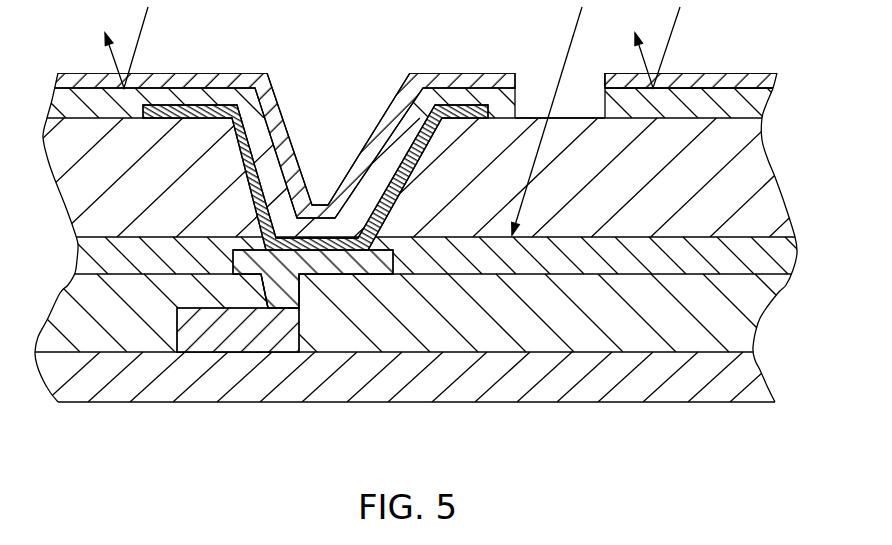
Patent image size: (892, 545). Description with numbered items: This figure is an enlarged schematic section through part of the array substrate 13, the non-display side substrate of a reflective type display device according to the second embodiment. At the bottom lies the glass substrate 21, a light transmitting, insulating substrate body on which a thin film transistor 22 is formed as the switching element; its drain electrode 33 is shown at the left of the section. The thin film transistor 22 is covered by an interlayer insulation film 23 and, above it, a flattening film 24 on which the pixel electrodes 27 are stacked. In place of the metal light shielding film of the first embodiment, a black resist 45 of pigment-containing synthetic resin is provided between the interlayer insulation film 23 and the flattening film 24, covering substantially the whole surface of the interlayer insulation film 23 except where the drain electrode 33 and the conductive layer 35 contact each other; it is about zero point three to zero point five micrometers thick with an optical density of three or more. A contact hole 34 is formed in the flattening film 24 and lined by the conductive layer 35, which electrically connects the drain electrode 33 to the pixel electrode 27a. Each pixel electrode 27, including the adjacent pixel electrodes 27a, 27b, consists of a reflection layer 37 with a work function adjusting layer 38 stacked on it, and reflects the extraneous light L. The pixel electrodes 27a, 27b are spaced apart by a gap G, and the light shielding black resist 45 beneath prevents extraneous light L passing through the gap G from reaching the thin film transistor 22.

The array substrate 13 is at (474, 51).
The glass substrate 21 is at (755, 379).
The thin film transistor 22 is at (268, 332).
The interlayer insulation film 23 is at (750, 324).
The flattening film 24 is at (765, 184).
The pixel electrodes 27 is at (426, 126).
The pixel electrode 27a is at (234, 73).
The pixel electrode 27b is at (765, 73).
The drain electrode 33 is at (363, 265).
The contact hole 34 is at (273, 248).
The conductive layer 35 is at (443, 107).
The reflection layer 37 is at (764, 103).
The work function adjusting layer 38 is at (766, 83).
The black resist 45 is at (493, 265).
The gap G is at (605, 87).
The extraneous light L is at (147, 18).